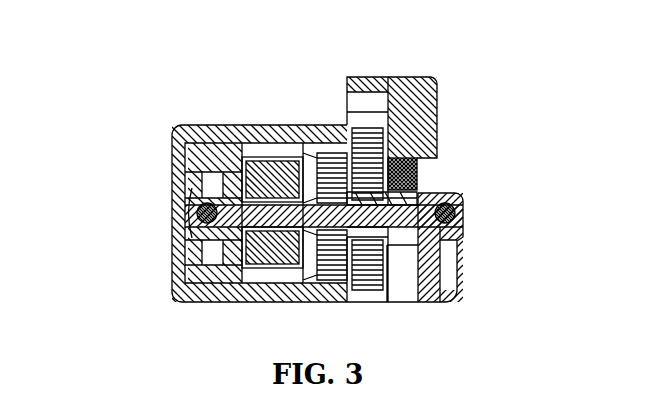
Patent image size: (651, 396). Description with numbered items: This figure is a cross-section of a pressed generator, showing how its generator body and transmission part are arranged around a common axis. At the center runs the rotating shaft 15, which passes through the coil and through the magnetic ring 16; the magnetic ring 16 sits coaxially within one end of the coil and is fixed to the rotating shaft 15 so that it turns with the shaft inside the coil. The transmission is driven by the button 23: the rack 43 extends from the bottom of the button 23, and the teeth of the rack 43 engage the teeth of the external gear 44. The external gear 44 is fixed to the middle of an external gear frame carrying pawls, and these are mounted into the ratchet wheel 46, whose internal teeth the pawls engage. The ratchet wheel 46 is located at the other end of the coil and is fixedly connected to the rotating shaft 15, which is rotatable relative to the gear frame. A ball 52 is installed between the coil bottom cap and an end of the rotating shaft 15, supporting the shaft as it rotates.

The rotating shaft 15 is at (197, 124).
The magnetic ring 16 is at (270, 170).
The button 23 is at (380, 78).
The rack 43 is at (418, 160).
The external gear 44 is at (410, 193).
The ratchet wheel 46 is at (387, 204).
The ball 52 is at (172, 166).